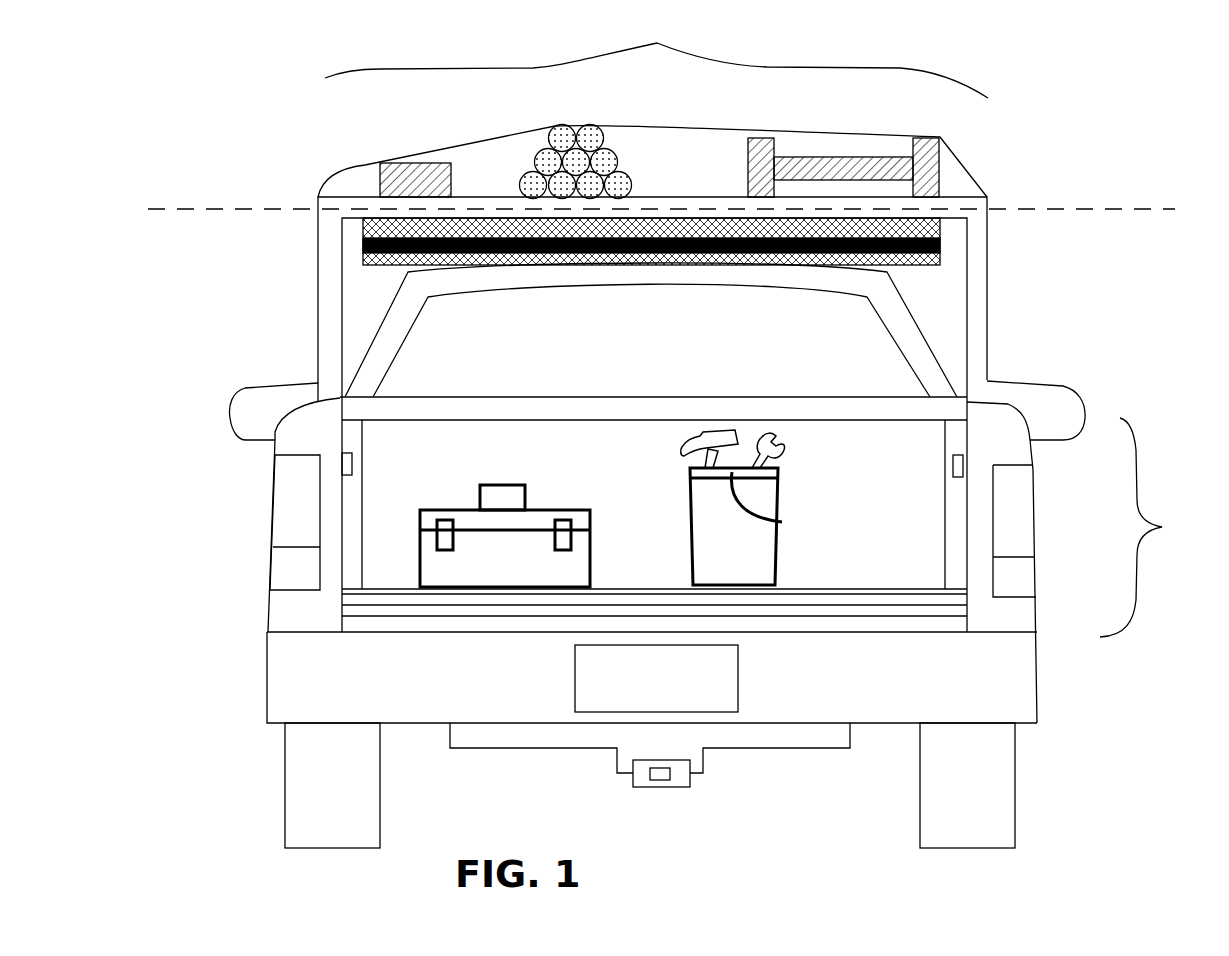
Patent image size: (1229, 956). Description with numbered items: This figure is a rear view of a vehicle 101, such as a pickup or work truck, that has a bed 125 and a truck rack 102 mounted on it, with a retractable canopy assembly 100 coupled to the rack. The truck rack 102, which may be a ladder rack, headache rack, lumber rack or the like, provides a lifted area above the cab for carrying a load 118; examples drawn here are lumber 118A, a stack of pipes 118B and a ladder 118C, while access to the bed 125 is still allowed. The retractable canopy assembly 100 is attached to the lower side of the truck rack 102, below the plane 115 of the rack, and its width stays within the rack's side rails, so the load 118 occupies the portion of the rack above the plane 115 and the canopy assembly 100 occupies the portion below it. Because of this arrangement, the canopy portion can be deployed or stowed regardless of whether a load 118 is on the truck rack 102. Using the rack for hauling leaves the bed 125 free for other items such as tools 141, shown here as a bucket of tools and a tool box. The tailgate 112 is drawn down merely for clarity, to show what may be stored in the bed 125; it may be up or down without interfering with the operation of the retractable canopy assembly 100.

The retractable canopy assembly 100 is at (363, 252).
The vehicle 101 is at (268, 573).
The truck rack 102 is at (988, 296).
The tailgate 112 is at (958, 611).
The plane 115 is at (1148, 209).
The load 118 is at (656, 55).
The lumber 118A is at (400, 164).
The pipes 118B is at (575, 128).
The ladder 118C is at (840, 166).
The bed 125 is at (1154, 527).
The tools 141 is at (690, 490).